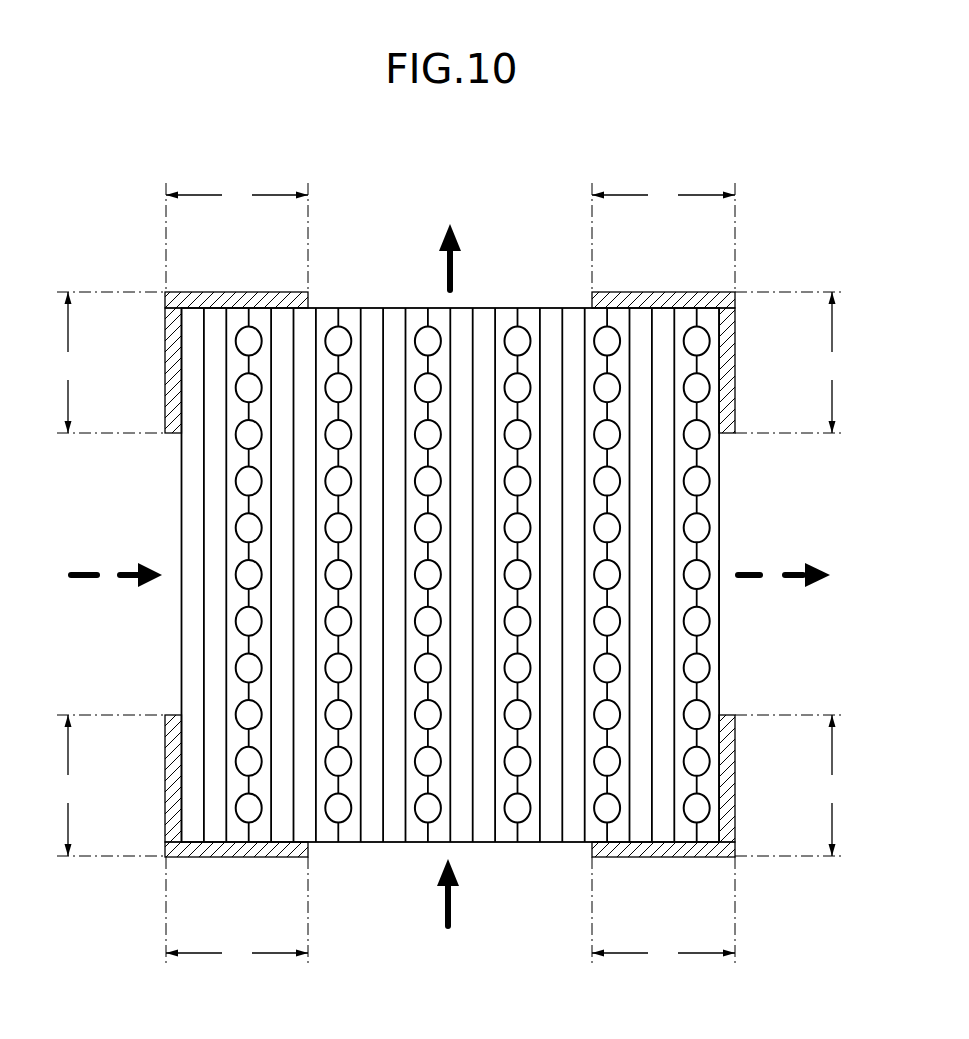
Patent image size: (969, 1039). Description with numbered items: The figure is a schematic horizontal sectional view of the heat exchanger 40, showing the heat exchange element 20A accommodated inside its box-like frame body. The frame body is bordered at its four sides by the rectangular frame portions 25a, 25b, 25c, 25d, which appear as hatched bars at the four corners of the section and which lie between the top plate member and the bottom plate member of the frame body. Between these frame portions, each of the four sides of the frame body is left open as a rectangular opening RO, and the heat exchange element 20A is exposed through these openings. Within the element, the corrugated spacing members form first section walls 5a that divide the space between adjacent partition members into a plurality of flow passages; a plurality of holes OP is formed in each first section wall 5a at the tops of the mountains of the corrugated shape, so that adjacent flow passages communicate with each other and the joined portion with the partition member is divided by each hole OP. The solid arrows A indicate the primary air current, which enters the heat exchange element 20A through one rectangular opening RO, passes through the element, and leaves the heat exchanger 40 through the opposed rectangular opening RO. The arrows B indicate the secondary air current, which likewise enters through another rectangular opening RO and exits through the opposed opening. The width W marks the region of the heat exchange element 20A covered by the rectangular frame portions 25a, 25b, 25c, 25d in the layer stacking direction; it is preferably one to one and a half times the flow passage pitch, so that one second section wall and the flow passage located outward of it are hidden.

The heat exchanger 40 is at (781, 189).
The first section wall 5a is at (483, 322).
The rectangular opening RO is at (363, 306).
The hole OP is at (519, 332).
The heat exchange element 20A is at (726, 619).
The rectangular frame portion 25a is at (233, 857).
The rectangular frame portion 25b is at (735, 366).
The rectangular frame portion 25c is at (236, 292).
The rectangular frame portion 25d is at (165, 362).
The width W is at (451, 574).
The primary air current arrow A is at (447, 272).
The secondary air current arrow B is at (83, 570).